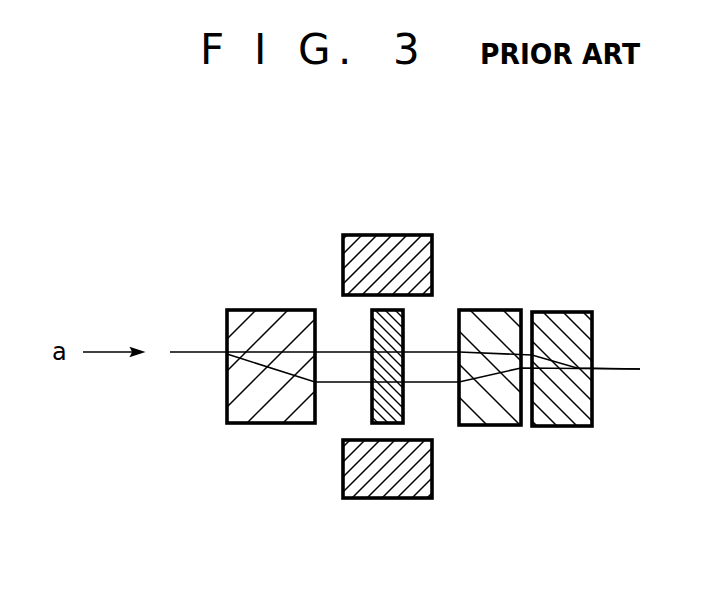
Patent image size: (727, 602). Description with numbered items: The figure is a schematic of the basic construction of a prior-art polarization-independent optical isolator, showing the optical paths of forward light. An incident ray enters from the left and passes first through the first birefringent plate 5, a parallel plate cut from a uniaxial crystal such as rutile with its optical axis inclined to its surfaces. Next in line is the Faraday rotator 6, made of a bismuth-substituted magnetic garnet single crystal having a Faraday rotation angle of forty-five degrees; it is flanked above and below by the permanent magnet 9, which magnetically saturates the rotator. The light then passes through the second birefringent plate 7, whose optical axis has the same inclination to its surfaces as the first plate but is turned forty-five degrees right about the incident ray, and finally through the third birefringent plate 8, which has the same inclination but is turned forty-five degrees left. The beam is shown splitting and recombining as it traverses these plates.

The first birefringent plate 5 is at (252, 310).
The Faraday rotator 6 is at (372, 338).
The second birefringent plate 7 is at (480, 310).
The third birefringent plate 8 is at (544, 312).
The permanent magnet 9 is at (385, 235).